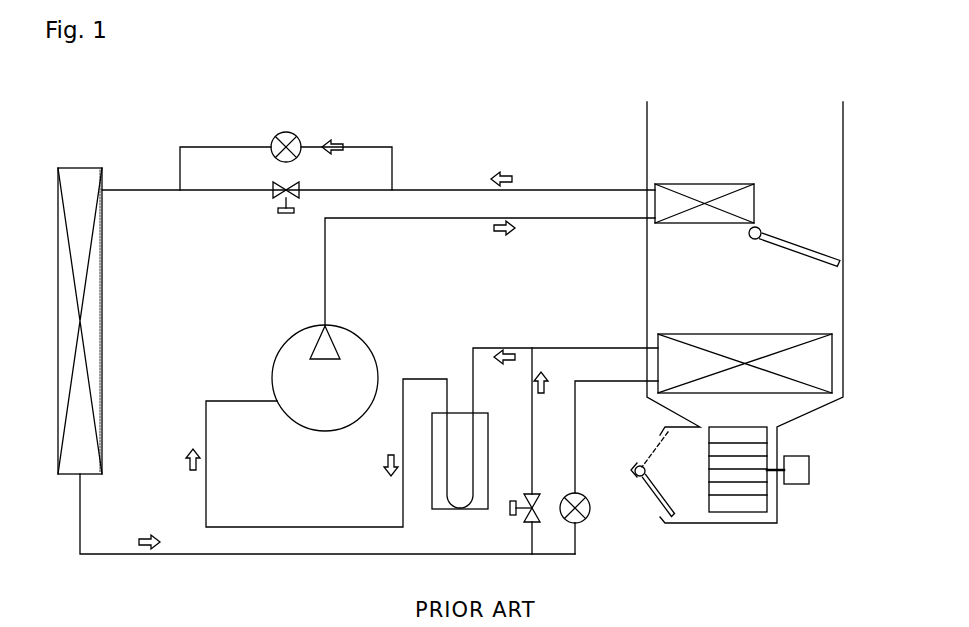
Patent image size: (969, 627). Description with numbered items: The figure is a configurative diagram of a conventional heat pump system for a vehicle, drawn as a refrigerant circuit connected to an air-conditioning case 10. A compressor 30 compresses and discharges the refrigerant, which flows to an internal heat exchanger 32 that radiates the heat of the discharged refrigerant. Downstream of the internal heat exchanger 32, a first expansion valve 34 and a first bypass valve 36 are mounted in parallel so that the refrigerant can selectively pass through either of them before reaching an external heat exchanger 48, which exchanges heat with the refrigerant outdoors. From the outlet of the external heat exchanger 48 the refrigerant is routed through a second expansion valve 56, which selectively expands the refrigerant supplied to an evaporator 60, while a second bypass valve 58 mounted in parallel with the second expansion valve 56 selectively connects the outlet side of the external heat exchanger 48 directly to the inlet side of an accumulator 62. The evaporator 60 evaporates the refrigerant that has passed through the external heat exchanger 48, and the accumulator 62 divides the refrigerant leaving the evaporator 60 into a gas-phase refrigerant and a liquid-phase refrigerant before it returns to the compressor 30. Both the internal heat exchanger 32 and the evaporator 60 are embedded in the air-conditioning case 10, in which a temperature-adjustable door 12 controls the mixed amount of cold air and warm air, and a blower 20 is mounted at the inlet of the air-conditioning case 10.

The air-conditioning case 10 is at (843, 133).
The temperature-adjustable door 12 is at (800, 249).
The blower 20 is at (752, 450).
The compressor 30 is at (288, 340).
The internal heat exchanger 32 is at (704, 184).
The first expansion valve 34 is at (286, 131).
The first bypass valve 36 is at (284, 214).
The external heat exchanger 48 is at (79, 168).
The second expansion valve 56 is at (585, 521).
The second bypass valve 58 is at (509, 514).
The evaporator 60 is at (815, 363).
The accumulator 62 is at (461, 412).